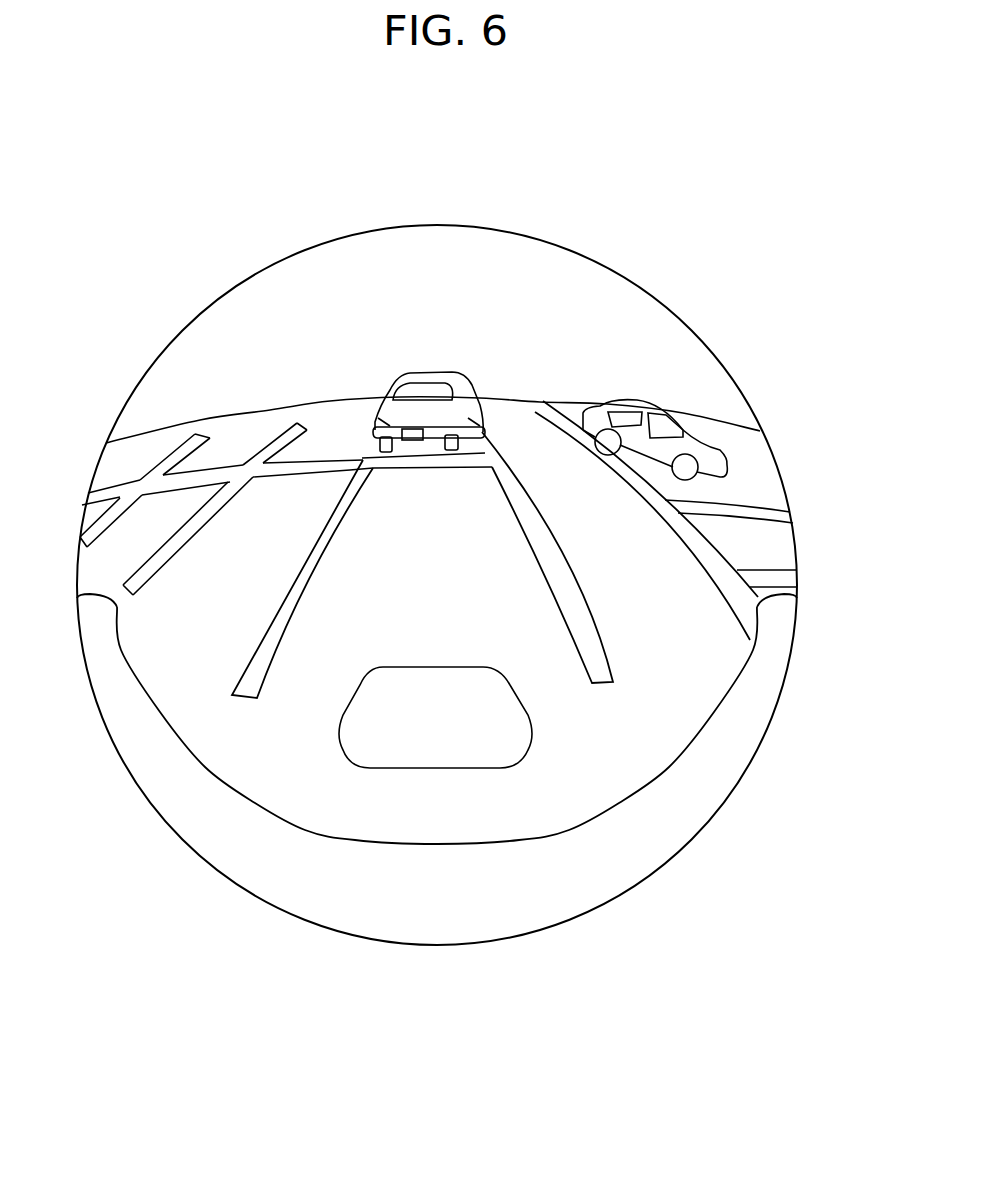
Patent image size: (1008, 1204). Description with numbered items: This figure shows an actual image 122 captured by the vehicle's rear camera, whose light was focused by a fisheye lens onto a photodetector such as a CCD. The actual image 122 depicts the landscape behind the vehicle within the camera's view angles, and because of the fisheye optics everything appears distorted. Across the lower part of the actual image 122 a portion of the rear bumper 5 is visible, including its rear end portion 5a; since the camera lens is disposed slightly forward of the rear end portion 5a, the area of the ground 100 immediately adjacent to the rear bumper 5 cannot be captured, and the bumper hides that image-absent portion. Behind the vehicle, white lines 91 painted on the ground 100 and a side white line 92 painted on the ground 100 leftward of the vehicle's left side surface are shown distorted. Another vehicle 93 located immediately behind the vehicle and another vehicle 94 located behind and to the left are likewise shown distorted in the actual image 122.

The actual image 122 is at (633, 246).
The ground 100 is at (645, 718).
The white lines 91 is at (287, 599).
The side white line 92 is at (687, 532).
The another vehicle 93 is at (412, 413).
The another vehicle 94 is at (630, 400).
The rear bumper 5 is at (572, 868).
The rear end portion 5a is at (433, 840).